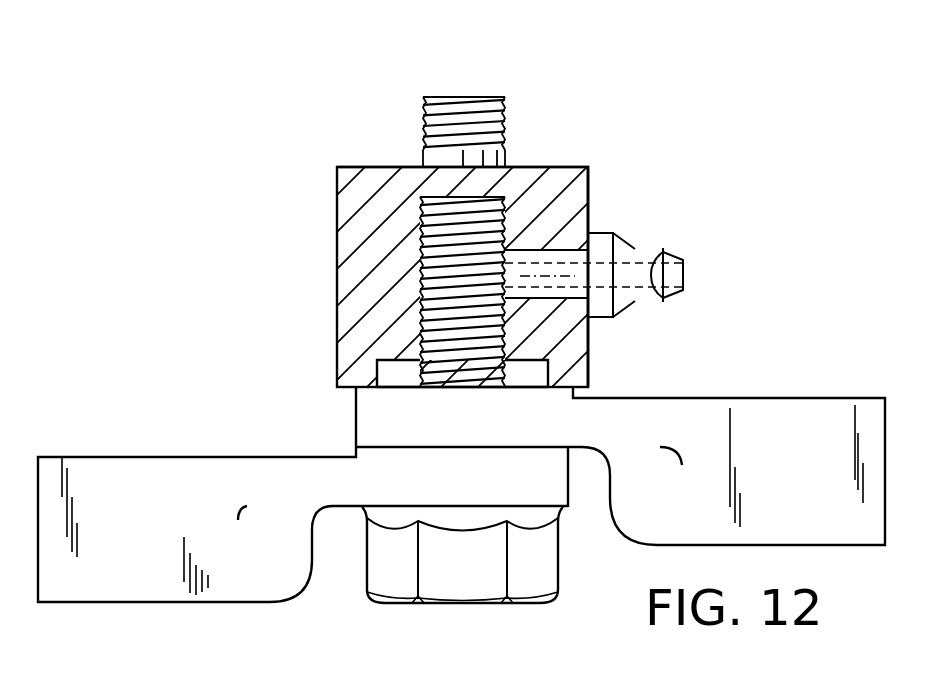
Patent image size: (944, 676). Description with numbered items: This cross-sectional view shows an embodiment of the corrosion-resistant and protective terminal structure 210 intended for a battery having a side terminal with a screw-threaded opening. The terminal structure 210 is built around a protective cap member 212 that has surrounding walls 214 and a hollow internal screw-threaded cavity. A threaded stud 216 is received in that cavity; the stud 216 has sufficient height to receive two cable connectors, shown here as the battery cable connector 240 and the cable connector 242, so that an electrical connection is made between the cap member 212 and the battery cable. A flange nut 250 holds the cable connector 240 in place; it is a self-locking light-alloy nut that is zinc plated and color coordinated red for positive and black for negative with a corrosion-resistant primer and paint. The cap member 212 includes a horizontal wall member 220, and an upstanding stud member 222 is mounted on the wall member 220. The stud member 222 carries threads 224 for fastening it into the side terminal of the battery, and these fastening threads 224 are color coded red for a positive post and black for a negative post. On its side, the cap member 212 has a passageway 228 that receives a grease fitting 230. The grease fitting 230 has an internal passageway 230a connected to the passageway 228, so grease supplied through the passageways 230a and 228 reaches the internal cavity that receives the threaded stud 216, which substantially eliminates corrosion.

The terminal structure 210 is at (553, 167).
The protective cap member 212 is at (592, 183).
The surrounding walls 214 is at (583, 348).
The threaded stud 216 is at (455, 300).
The horizontal wall member 220 is at (412, 185).
The upstanding stud member 222 is at (507, 103).
The threads 224 is at (422, 103).
The passageway 228 is at (567, 249).
The grease fitting 230 is at (658, 247).
The internal passageway 230a is at (685, 277).
The battery cable connector 240 is at (828, 468).
The cable connector 242 is at (143, 533).
The flange nut 250 is at (450, 582).